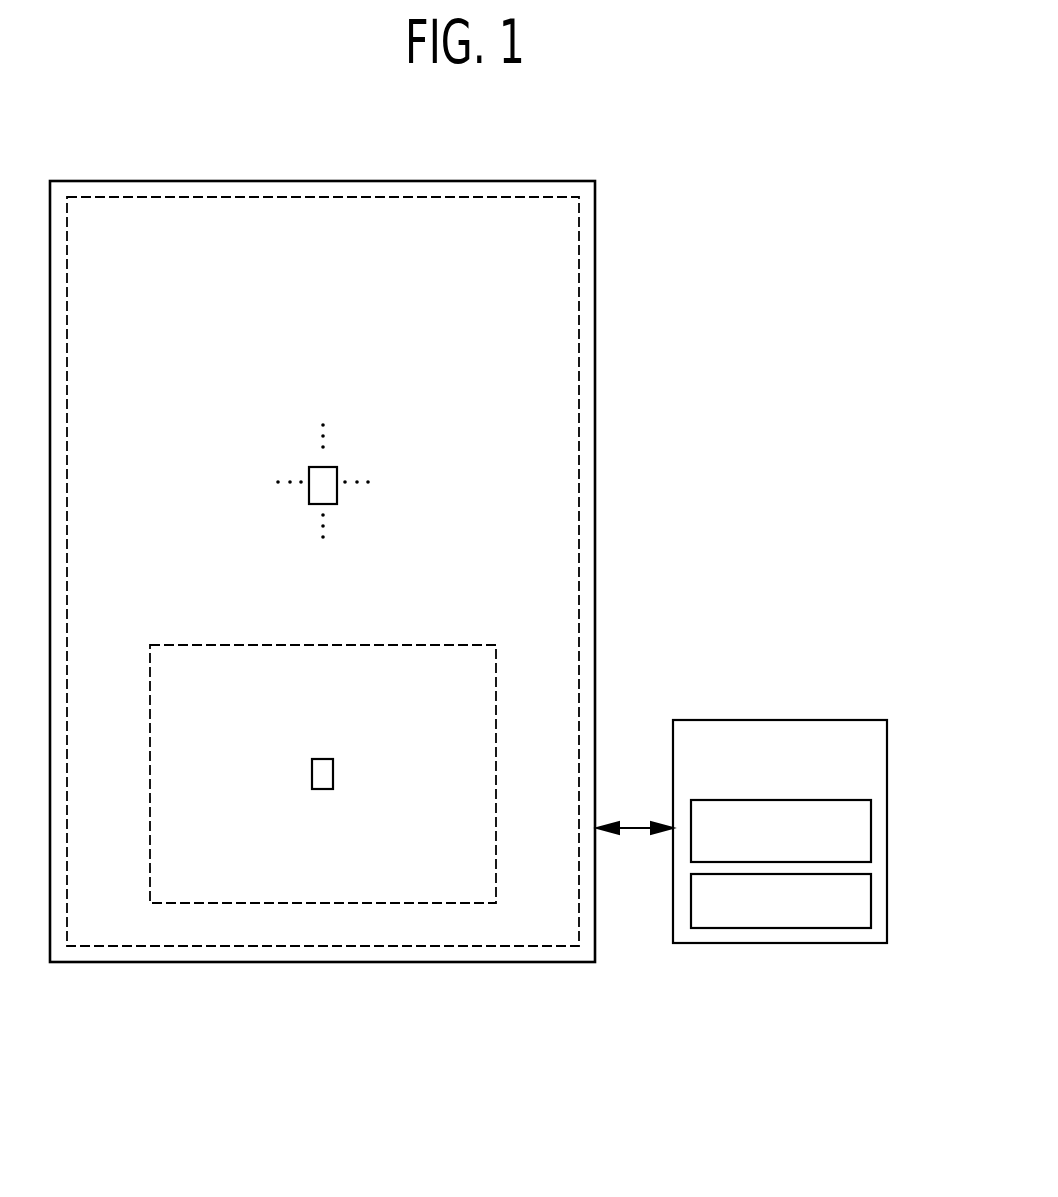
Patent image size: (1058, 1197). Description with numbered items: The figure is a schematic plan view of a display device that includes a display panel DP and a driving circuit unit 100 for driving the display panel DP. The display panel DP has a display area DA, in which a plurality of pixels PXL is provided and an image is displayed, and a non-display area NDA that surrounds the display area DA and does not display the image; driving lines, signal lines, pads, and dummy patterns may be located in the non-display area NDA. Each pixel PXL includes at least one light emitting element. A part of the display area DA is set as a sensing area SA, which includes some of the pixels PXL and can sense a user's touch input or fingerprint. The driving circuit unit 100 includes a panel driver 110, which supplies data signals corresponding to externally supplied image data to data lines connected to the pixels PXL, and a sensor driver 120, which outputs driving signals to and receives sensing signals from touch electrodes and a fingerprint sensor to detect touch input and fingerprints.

The display panel DP is at (580, 145).
The display area DA is at (548, 402).
The non-display area NDA is at (590, 538).
The sensing area SA is at (269, 880).
The pixel PXL is at (312, 468).
The driving circuit unit 100 is at (822, 720).
The panel driver 110 is at (871, 830).
The sensor driver 120 is at (871, 898).